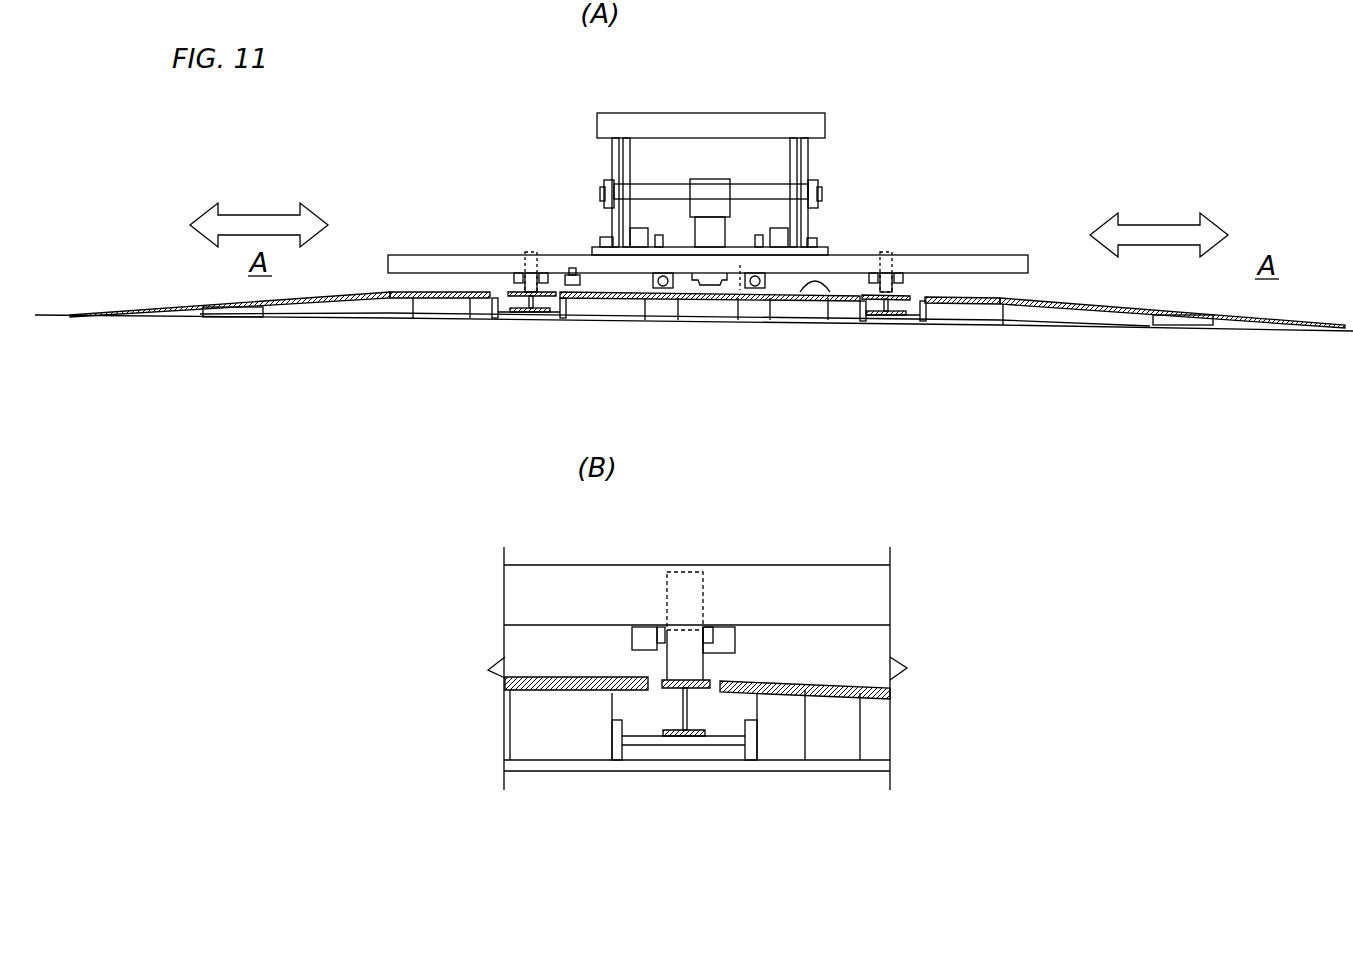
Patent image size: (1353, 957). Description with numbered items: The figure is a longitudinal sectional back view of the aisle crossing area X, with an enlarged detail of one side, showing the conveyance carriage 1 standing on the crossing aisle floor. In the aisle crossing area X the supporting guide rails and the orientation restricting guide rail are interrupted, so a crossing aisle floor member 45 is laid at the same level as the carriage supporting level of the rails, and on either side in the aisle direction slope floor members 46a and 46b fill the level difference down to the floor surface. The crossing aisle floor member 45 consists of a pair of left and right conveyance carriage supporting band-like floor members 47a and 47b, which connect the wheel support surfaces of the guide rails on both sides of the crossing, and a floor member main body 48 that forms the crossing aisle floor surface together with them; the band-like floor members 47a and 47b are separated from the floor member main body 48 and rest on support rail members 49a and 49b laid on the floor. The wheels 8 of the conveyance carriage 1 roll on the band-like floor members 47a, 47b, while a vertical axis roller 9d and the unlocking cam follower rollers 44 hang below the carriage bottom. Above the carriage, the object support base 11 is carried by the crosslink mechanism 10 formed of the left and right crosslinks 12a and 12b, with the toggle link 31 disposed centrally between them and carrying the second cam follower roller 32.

In FIG. 11A, the conveyance carriage 1 is at (432, 258).
In FIG. 11B, the conveyance carriage 1 is at (785, 585).
In FIG. 11A, the wheels 8 is at (530, 285).
In FIG. 11B, the wheels 8 is at (682, 640).
In FIG. 11A, the vertical axis roller 9d is at (573, 268).
In FIG. 11A, the crosslink mechanism 10 is at (814, 158).
In FIG. 11A, the object support base 11 is at (712, 120).
In FIG. 11A, the crosslink 12a is at (606, 163).
In FIG. 11A, the crosslink 12b is at (812, 218).
In FIG. 11A, the toggle link 31 is at (682, 214).
In FIG. 11A, the second cam follower roller 32 is at (708, 286).
In FIG. 11A, the unlocking cam follower rollers 44 is at (664, 290).
In FIG. 11A, the crossing aisle floor member 45 is at (820, 288).
In FIG. 11B, the crossing aisle floor member 45 is at (622, 680).
In FIG. 11A, the slope floor member 46a is at (215, 300).
In FIG. 11A, the slope floor member 46b is at (1060, 300).
In FIG. 11B, the slope floor member 46b is at (880, 700).
In FIG. 11A, the conveyance carriage supporting band-like floor member 47a is at (505, 300).
In FIG. 11A, the conveyance carriage supporting band-like floor member 47b is at (915, 302).
In FIG. 11B, the conveyance carriage supporting band-like floor member 47b is at (712, 683).
In FIG. 11A, the floor member main body 48 is at (500, 287).
In FIG. 11B, the floor member main body 48 is at (540, 675).
In FIG. 11A, the support rail member 49a is at (535, 300).
In FIG. 11A, the support rail member 49b is at (890, 302).
In FIG. 11B, the support rail member 49b is at (688, 710).
In FIG. 11A, the aisle crossing area X is at (740, 275).